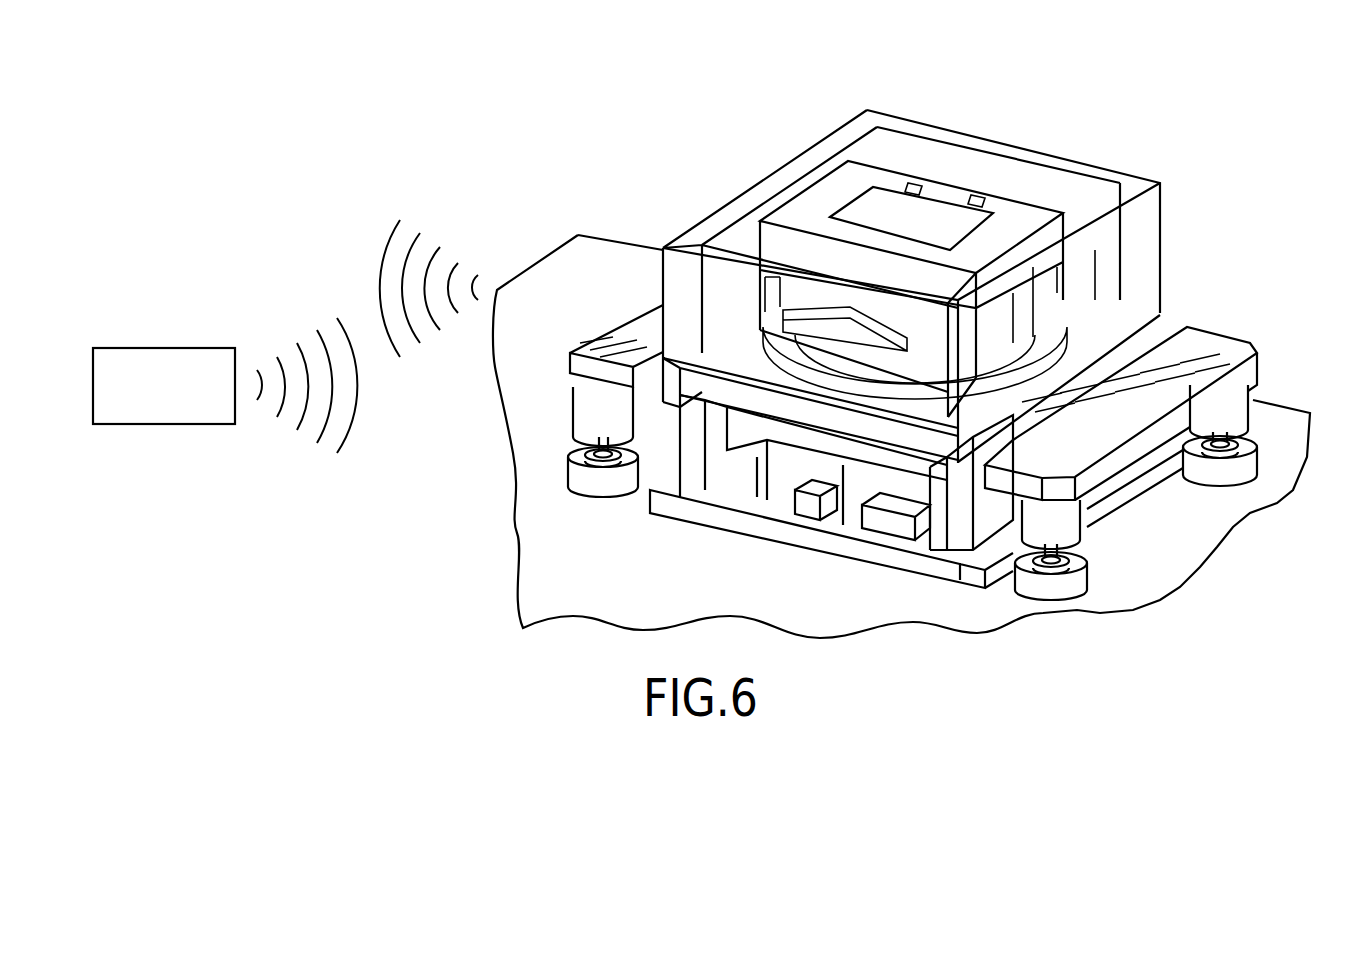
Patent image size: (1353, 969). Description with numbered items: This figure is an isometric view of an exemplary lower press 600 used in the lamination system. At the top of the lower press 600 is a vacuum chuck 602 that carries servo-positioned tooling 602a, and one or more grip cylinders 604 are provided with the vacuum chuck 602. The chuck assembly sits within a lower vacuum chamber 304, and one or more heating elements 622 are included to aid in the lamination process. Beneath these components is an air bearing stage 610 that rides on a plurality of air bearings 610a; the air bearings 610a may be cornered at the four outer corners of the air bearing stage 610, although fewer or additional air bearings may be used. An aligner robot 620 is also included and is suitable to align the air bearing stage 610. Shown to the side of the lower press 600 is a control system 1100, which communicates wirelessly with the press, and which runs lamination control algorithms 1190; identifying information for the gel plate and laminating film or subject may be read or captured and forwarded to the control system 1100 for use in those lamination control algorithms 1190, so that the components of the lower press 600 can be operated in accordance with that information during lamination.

The lower press 600 is at (222, 141).
The control system 1100 is at (285, 336).
The lamination control algorithms 1190 is at (195, 398).
The heating elements 622 is at (690, 245).
The lower vacuum chamber 304 is at (690, 318).
The vacuum chuck 602 is at (876, 221).
The servo-positioned tooling 602a is at (820, 203).
The grip cylinders 604 is at (910, 187).
The air bearing stage 610 is at (1198, 338).
The air bearings 610a is at (1213, 473).
The aligner robot 620 is at (763, 482).